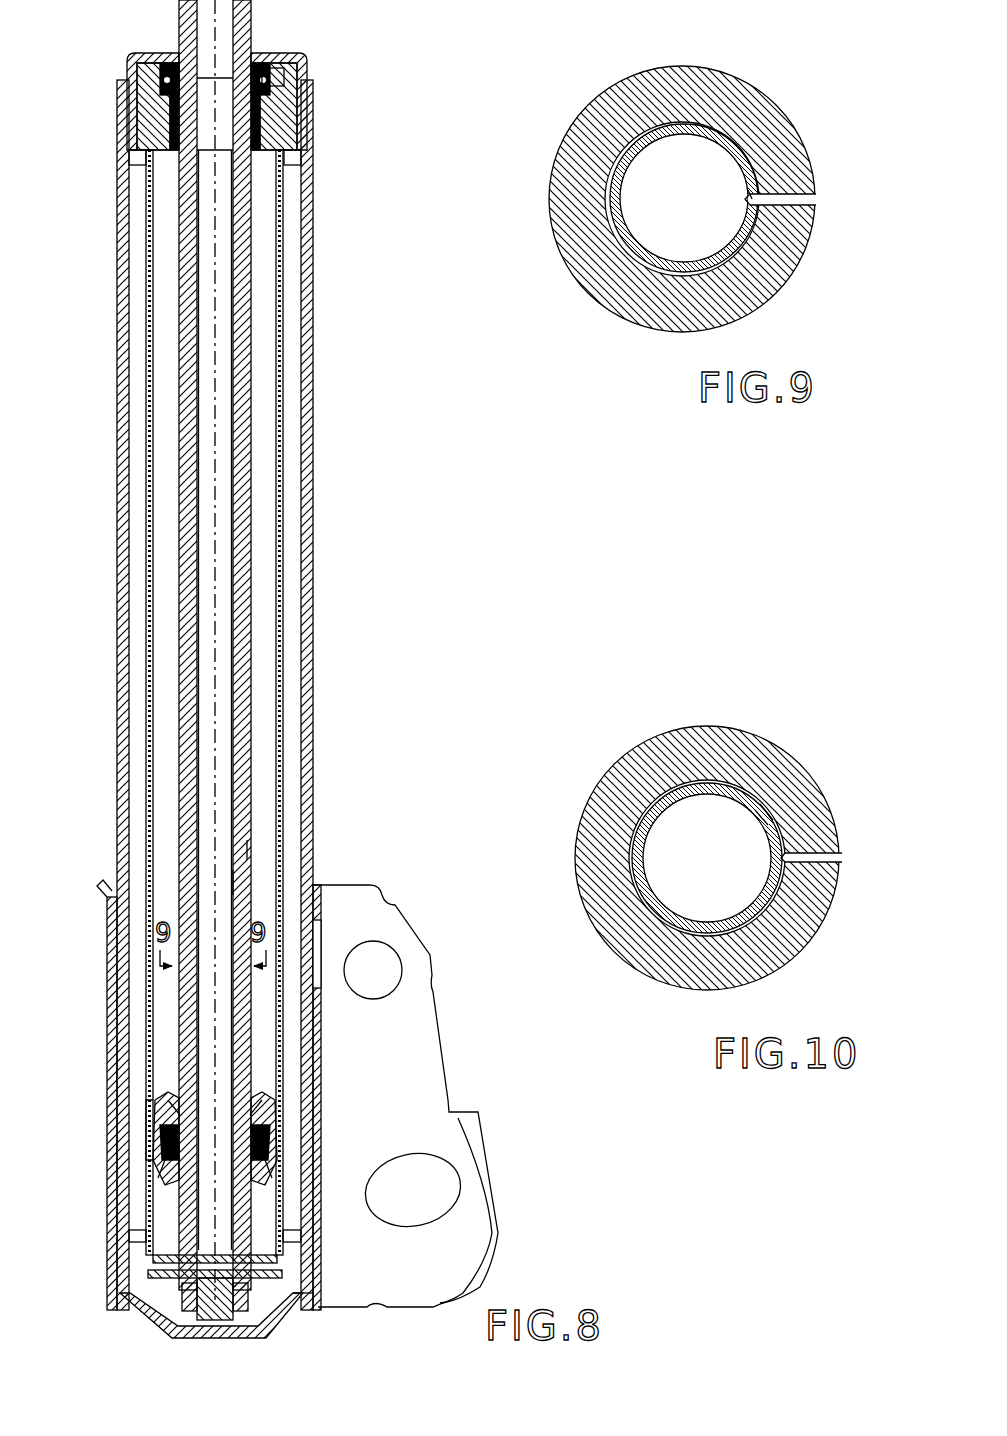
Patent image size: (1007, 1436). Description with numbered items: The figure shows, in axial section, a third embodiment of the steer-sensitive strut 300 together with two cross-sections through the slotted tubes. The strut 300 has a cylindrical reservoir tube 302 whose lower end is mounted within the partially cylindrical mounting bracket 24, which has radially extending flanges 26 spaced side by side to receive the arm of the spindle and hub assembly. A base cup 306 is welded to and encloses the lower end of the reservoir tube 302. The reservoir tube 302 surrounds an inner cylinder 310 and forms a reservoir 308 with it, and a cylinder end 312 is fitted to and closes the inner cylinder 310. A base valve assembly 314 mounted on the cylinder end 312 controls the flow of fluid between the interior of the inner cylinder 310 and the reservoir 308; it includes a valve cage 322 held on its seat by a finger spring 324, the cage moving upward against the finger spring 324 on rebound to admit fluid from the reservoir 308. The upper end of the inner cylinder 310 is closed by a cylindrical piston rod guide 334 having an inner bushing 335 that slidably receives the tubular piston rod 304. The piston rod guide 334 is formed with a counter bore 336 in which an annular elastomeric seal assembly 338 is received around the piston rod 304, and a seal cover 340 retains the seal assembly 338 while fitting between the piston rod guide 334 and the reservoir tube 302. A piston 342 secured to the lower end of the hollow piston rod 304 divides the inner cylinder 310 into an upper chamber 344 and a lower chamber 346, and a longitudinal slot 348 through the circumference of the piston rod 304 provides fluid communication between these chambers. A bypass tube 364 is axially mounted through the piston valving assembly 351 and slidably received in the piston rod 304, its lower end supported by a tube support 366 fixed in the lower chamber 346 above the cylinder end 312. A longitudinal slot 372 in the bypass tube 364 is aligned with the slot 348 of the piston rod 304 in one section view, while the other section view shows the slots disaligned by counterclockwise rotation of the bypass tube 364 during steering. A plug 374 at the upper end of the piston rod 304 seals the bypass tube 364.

In FIG. 8, the mounting bracket 24 is at (115, 1008).
In FIG. 8, the radially extending flanges 26 is at (415, 998).
In FIG. 8, the strut 300 is at (333, 687).
In FIG. 8, the reservoir tube 302 is at (313, 372).
In FIG. 8, the piston rod 304 is at (251, 573).
In FIG. 9, the piston rod 304 is at (740, 285).
In FIG. 10, the piston rod 304 is at (712, 750).
In FIG. 8, the base cup 306 is at (258, 1318).
In FIG. 8, the reservoir 308 is at (128, 437).
In FIG. 8, the inner cylinder 310 is at (290, 440).
In FIG. 8, the cylinder end 312 is at (302, 1308).
In FIG. 8, the base valve assembly 314 is at (178, 1330).
In FIG. 8, the valve cage 322 is at (145, 1270).
In FIG. 8, the finger spring 324 is at (168, 1263).
In FIG. 8, the piston rod guide 334 is at (118, 117).
In FIG. 8, the inner bushing 335 is at (258, 152).
In FIG. 8, the counter bore 336 is at (272, 98).
In FIG. 8, the seal assembly 338 is at (293, 90).
In FIG. 8, the seal cover 340 is at (127, 60).
In FIG. 8, the piston 342 is at (312, 1090).
In FIG. 8, the upper chamber 344 is at (160, 1025).
In FIG. 8, the lower chamber 346 is at (315, 1188).
In FIG. 8, the longitudinal slot 348 is at (248, 850).
In FIG. 9, the longitudinal slot 348 is at (812, 195).
In FIG. 10, the longitudinal slot 348 is at (835, 855).
In FIG. 8, the piston valving assembly 351 is at (168, 1178).
In FIG. 8, the bypass tube 364 is at (190, 568).
In FIG. 9, the bypass tube 364 is at (625, 292).
In FIG. 10, the bypass tube 364 is at (680, 985).
In FIG. 8, the tube support 366 is at (313, 1237).
In FIG. 8, the longitudinal slot 372 is at (236, 882).
In FIG. 9, the longitudinal slot 372 is at (750, 203).
In FIG. 10, the longitudinal slot 372 is at (765, 825).
In FIG. 8, the plug 374 is at (223, 88).